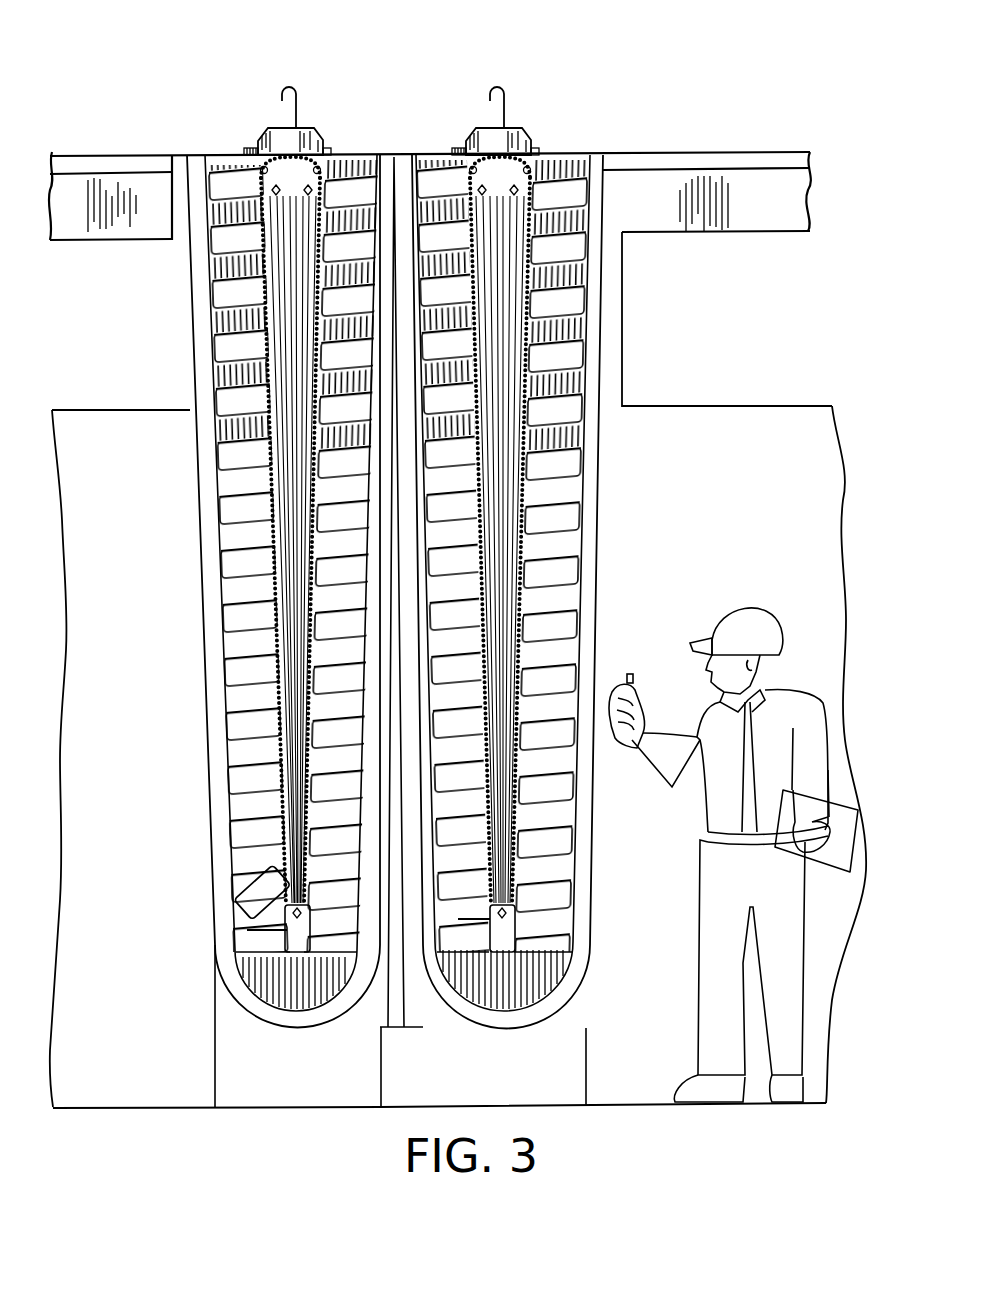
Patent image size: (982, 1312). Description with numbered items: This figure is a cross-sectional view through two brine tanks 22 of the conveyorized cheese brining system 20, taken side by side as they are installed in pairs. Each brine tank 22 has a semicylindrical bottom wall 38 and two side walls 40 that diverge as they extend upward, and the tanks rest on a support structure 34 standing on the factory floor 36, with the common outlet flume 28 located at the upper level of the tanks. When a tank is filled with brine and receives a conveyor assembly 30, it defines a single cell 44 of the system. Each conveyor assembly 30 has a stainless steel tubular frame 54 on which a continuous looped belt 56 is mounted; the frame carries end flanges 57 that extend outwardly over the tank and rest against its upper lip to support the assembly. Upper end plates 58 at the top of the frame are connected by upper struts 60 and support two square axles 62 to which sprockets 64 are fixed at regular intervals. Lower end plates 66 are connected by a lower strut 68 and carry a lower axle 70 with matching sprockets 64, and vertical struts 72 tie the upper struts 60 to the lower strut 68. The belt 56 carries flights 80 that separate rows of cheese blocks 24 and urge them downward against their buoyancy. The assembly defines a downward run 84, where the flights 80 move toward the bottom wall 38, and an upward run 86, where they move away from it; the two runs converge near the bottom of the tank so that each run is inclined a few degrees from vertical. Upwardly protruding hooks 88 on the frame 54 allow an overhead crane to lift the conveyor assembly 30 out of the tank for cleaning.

The conveyorized cheese brining system 20 is at (625, 112).
The brine tank 22 is at (195, 350).
The cheese block 24 is at (240, 848).
The common outlet flume 28 is at (745, 150).
The conveyor assembly 30 is at (317, 128).
The support structure 34 is at (590, 1042).
The factory floor 36 is at (600, 1104).
The semicylindrical bottom wall 38 is at (238, 1010).
The side wall 40 is at (235, 745).
The cell 44 is at (232, 575).
The tubular frame 54 is at (262, 133).
The continuous looped belt 56 is at (278, 633).
The end flange 57 is at (240, 150).
The upper end plate 58 is at (325, 128).
The upper strut 60 is at (290, 174).
The square axle 62 is at (500, 176).
The sprocket 64 is at (261, 181).
The lower end plate 66 is at (280, 940).
The lower strut 68 is at (285, 922).
The lower axle 70 is at (300, 935).
The vertical strut 72 is at (303, 253).
The flight 80 is at (258, 485).
The downward run 84 is at (245, 665).
The upward run 86 is at (355, 705).
The hook 88 is at (284, 82).